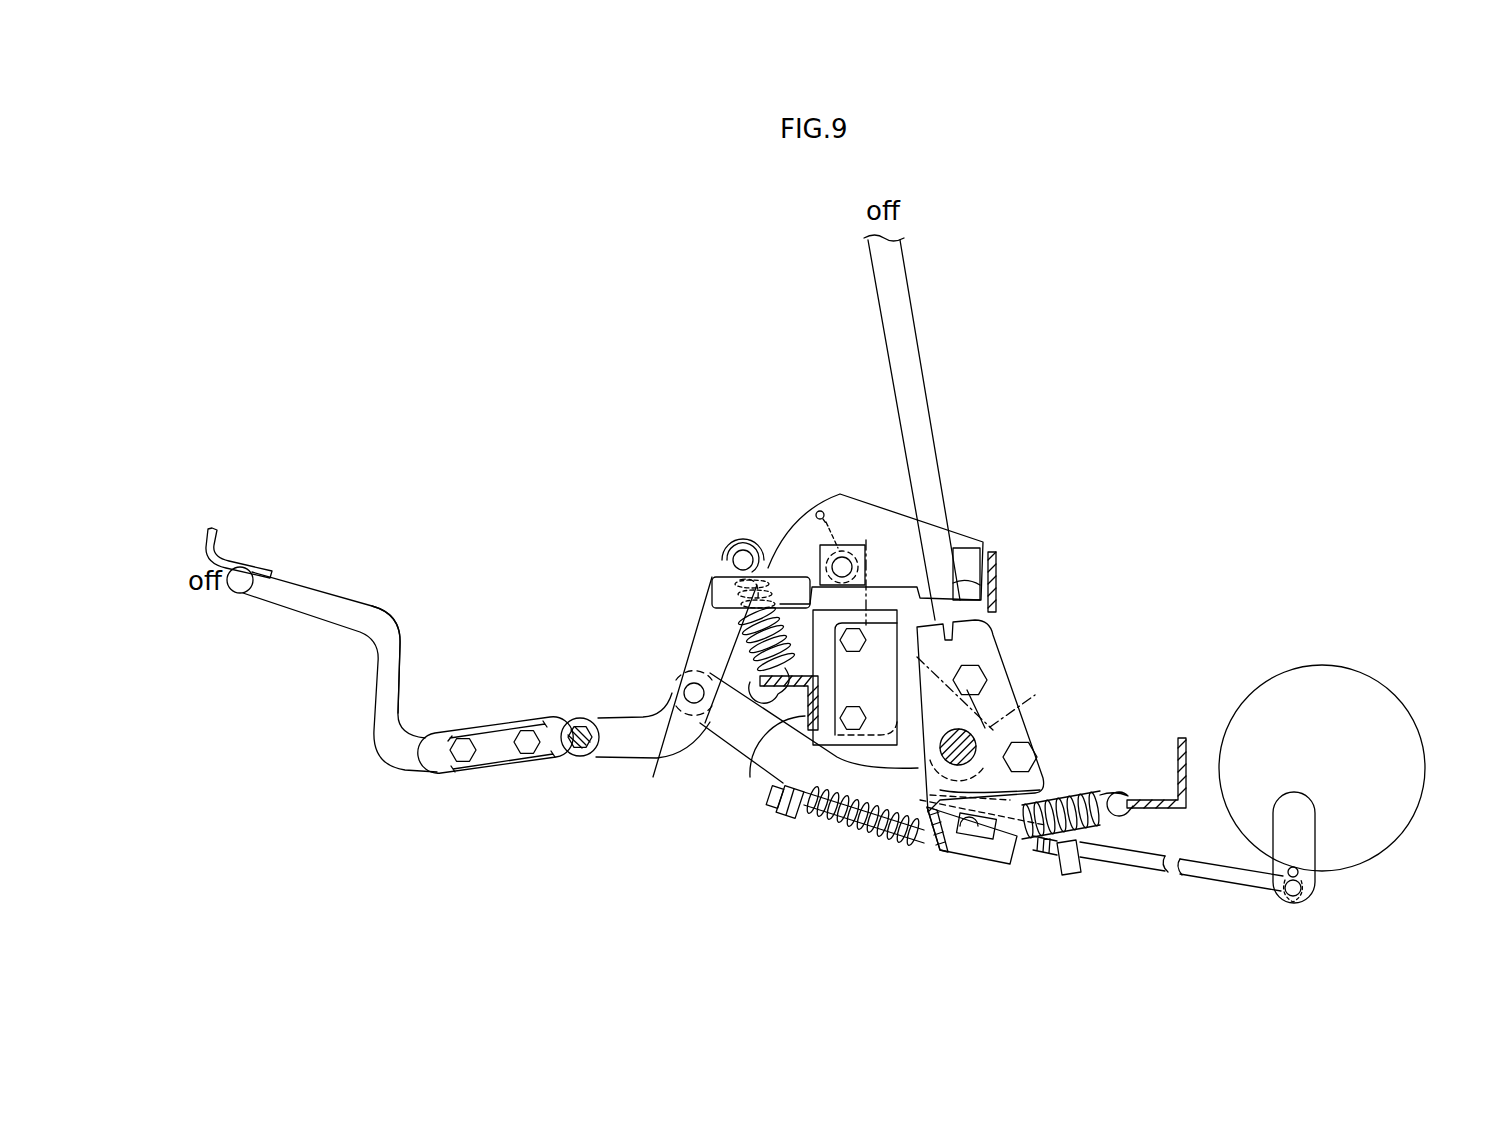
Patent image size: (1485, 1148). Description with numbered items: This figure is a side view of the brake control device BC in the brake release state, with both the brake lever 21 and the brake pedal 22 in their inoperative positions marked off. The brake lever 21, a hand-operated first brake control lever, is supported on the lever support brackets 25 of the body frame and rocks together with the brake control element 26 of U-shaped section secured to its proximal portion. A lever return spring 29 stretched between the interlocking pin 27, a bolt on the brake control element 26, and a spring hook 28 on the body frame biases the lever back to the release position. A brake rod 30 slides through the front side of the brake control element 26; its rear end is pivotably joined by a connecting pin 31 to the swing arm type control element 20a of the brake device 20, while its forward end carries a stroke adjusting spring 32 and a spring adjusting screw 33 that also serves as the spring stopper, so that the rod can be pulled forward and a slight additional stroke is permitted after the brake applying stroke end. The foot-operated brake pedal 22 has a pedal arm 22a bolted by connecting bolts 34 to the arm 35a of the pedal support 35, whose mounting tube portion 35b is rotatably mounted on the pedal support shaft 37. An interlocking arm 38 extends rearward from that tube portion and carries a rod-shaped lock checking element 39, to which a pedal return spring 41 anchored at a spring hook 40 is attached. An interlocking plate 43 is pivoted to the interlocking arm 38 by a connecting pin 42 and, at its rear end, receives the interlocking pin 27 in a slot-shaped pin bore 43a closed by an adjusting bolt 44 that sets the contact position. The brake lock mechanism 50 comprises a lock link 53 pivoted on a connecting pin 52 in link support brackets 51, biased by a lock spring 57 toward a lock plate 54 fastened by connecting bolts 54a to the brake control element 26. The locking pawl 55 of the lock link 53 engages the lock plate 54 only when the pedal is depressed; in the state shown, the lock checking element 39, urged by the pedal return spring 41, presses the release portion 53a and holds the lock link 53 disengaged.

The brake control device BC is at (568, 470).
The brake device 20 is at (1323, 685).
The control element 20a is at (1305, 828).
The brake lever 21 is at (908, 360).
The brake pedal 22 is at (248, 558).
The pedal arm 22a is at (393, 648).
The lever support bracket 25 is at (975, 725).
The brake control element 26 is at (935, 840).
The interlocking pin 27 is at (985, 852).
The spring hook 28 is at (1177, 755).
The lever return spring 29 is at (1068, 790).
The brake rod 30 is at (1213, 877).
The connecting pin 31 is at (1297, 905).
The stroke adjusting spring 32 is at (833, 820).
The spring adjusting screw 33 is at (785, 818).
The connecting bolt 34 is at (522, 748).
The pedal support 35 is at (609, 664).
The arm 35a is at (490, 727).
The mounting tube portion 35b is at (580, 712).
The pedal support shaft 37 is at (562, 757).
The interlocking arm 38 is at (620, 740).
The lock checking element 39 is at (741, 552).
The spring hook 40 is at (760, 798).
The pedal return spring 41 is at (740, 630).
The connecting pin 42 is at (687, 700).
The interlocking plate 43 is at (727, 730).
The pin bore 43a is at (950, 830).
The adjusting bolt 44 is at (1067, 878).
The brake lock mechanism 50 is at (1062, 512).
The link support bracket 51 is at (868, 570).
The connecting pin 52 is at (828, 560).
The lock link 53 is at (963, 530).
The release portion 53a is at (720, 592).
The lock plate 54 is at (1017, 665).
The connecting bolt 54a is at (968, 672).
The locking pawl 55 is at (990, 587).
The lock spring 57 is at (838, 540).